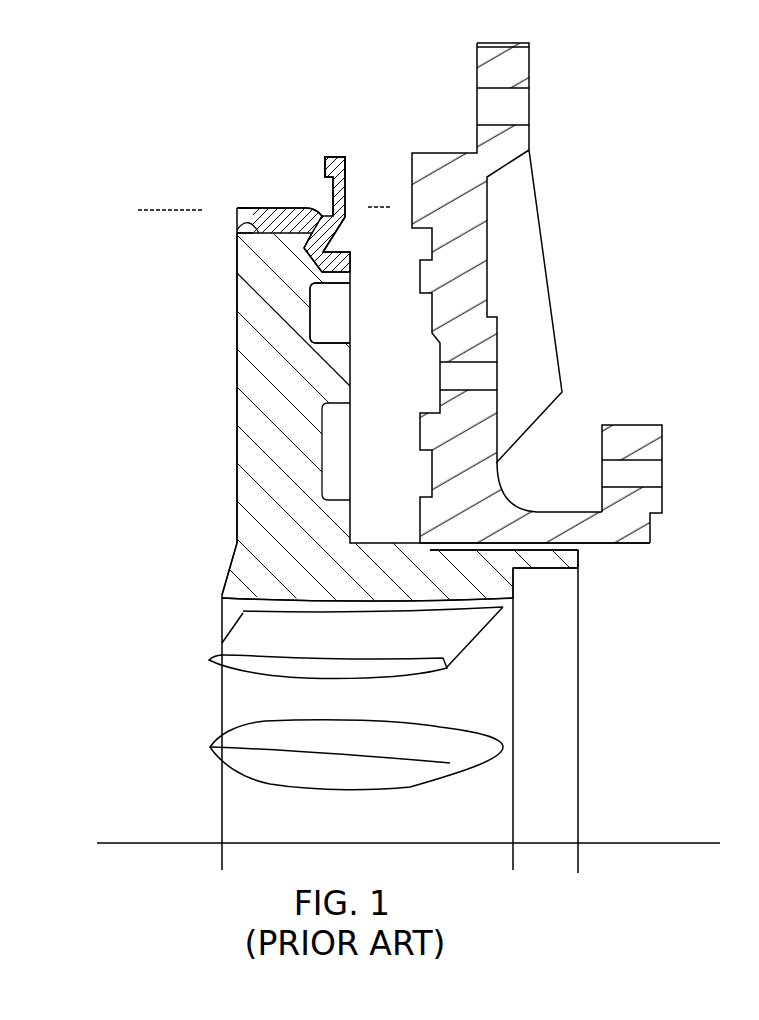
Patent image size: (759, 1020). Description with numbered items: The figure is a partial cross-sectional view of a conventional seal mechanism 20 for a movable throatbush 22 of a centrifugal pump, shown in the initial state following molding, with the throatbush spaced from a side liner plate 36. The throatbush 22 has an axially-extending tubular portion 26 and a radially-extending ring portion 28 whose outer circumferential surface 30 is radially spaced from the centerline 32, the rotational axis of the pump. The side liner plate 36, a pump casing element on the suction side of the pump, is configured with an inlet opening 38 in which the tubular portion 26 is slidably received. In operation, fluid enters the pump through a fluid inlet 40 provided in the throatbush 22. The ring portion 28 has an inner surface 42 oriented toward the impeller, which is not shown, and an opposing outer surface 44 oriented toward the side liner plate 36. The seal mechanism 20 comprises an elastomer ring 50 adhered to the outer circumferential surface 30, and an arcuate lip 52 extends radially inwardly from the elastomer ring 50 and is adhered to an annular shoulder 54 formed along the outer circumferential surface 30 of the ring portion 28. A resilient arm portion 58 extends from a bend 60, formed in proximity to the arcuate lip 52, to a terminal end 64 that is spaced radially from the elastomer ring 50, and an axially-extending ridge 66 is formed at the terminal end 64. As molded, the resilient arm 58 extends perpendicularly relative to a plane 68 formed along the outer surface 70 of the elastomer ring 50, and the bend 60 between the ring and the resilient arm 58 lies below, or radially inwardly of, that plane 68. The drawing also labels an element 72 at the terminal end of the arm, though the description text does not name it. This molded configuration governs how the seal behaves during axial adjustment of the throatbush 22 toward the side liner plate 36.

The seal mechanism 20 is at (237, 193).
The throatbush 22 is at (192, 618).
The tubular portion 26 is at (483, 572).
The ring portion 28 is at (253, 498).
The outer circumferential surface 30 is at (238, 232).
The centerline 32 is at (633, 843).
The side liner plate 36 is at (531, 148).
The inlet opening 38 is at (623, 543).
The fluid inlet 40 is at (486, 709).
The inner surface 42 is at (238, 450).
The outer surface 44 is at (350, 367).
The elastomer ring 50 is at (277, 213).
The arcuate lip 52 is at (340, 260).
The annular shoulder 54 is at (330, 250).
The resilient arm portion 58 is at (320, 198).
The bend 60 is at (344, 221).
The terminal end 64 is at (328, 155).
The axially-extending ridge 66 is at (331, 188).
The plane 68 is at (153, 210).
The outer surface 70 is at (247, 207).
The seal knife edge 72 is at (348, 178).